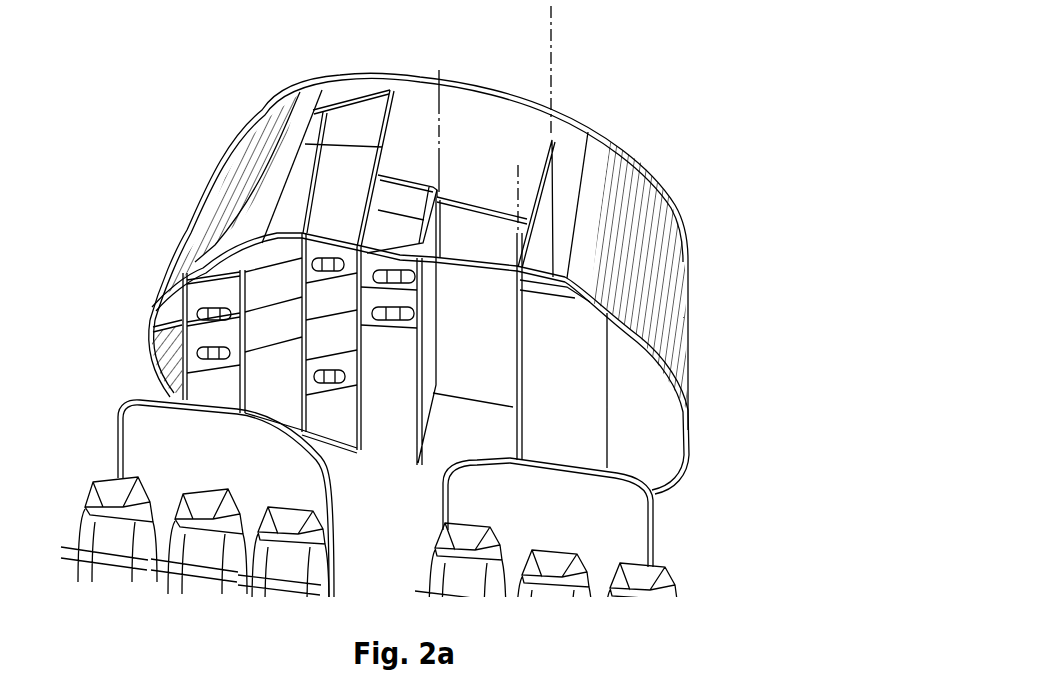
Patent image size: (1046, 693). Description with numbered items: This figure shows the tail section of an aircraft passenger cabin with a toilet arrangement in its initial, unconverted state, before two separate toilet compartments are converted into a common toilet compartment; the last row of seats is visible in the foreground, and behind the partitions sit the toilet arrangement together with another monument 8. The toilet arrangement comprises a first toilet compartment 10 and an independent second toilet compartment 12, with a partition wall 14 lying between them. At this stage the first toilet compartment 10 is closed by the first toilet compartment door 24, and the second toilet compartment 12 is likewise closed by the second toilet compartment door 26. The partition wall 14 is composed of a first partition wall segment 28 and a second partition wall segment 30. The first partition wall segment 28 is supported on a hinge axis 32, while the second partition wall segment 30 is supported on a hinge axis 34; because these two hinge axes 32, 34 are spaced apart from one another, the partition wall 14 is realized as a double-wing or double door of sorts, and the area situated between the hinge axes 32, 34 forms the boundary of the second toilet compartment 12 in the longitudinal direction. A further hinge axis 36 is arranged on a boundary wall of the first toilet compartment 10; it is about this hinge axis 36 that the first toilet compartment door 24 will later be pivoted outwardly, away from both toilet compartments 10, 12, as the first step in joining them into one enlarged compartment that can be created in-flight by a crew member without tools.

The monument 8 is at (258, 320).
The first toilet compartment 10 is at (472, 138).
The second toilet compartment 12 is at (572, 220).
The partition wall 14 is at (535, 182).
The first toilet compartment door 24 is at (479, 384).
The second toilet compartment door 26 is at (577, 407).
The first partition wall segment 28 is at (567, 218).
The second partition wall segment 30 is at (532, 265).
The hinge axis 32 is at (551, 58).
The hinge axis 34 is at (517, 240).
The hinge axis 36 is at (438, 112).